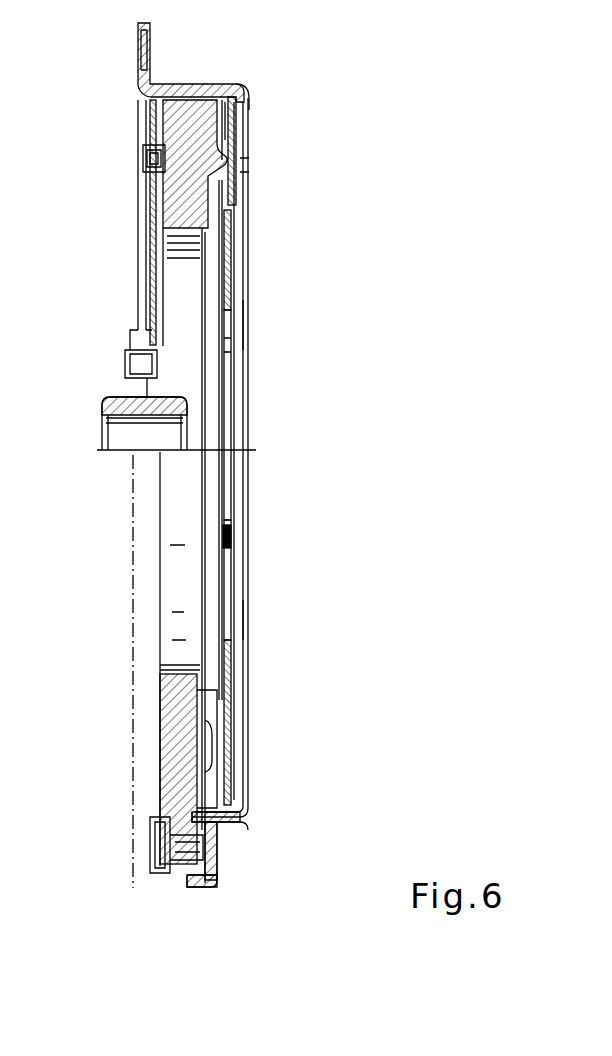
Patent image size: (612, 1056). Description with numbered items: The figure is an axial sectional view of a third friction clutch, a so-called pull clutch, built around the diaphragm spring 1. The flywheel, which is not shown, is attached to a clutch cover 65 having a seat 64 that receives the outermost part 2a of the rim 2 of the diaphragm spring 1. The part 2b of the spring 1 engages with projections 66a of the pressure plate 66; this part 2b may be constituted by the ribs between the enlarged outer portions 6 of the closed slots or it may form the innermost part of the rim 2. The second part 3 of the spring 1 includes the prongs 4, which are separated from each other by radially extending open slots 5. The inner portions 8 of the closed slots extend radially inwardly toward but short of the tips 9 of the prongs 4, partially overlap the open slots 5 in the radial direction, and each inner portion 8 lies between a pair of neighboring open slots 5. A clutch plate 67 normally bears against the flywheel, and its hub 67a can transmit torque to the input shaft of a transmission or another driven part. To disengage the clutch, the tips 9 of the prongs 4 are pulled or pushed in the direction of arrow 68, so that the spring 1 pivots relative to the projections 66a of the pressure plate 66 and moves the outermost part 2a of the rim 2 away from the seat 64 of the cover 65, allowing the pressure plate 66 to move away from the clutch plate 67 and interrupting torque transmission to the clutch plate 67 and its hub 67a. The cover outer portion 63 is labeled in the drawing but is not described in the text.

The diaphragm spring 1 is at (223, 252).
The rim 2 is at (233, 140).
The outermost part of the rim 2a is at (243, 102).
The part of the spring 2b is at (233, 167).
The second part of the spring 3 is at (238, 248).
The prongs 4 is at (233, 620).
The open slots 5 is at (227, 595).
The enlarged outer portions of the closed slots 6 is at (232, 212).
The inner portions of closed slots 8 is at (227, 277).
The tips of the prongs 9 is at (232, 345).
The cover outer portion 63 is at (245, 325).
The seat 64 is at (238, 93).
The clutch cover 65 is at (208, 84).
The pressure plate 66 is at (183, 213).
The projections of the pressure plate 66a is at (215, 162).
The clutch plate 67 is at (153, 205).
The hub 67a is at (110, 396).
The arrow 68 is at (175, 528).